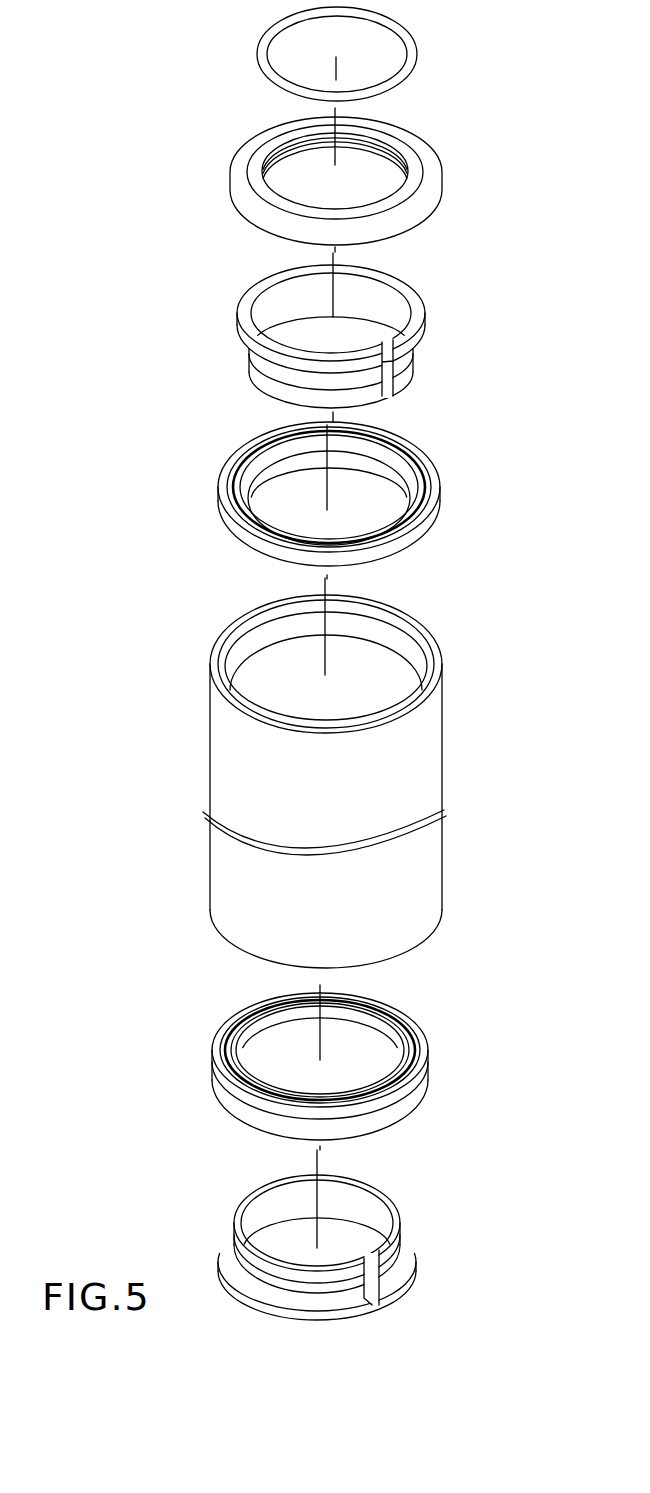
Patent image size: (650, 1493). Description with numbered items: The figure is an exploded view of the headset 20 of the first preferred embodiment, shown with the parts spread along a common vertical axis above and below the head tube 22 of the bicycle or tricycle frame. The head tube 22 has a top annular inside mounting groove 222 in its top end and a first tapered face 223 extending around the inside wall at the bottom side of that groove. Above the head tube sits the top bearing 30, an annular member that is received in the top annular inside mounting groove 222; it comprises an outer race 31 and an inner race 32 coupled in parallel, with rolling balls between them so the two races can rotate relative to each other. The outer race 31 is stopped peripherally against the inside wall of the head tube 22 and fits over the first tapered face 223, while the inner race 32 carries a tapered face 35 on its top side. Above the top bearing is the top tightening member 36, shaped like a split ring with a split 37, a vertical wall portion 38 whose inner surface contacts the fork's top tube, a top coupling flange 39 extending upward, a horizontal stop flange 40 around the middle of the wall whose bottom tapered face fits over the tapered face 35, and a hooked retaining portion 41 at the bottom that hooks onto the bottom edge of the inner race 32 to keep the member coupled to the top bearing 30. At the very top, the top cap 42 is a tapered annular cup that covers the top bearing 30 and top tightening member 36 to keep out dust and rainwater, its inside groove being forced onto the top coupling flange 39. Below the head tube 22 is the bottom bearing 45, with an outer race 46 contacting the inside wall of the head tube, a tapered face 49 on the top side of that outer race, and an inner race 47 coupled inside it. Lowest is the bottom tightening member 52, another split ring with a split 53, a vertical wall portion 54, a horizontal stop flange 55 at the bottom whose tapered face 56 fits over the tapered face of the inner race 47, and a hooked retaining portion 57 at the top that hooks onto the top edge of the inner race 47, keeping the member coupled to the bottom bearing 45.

The headset 20 is at (178, 316).
The head tube 22 is at (423, 752).
The top annular inside mounting groove 222 is at (410, 637).
The first tapered face 223 is at (383, 638).
The top bearing 30 is at (218, 517).
The outer race 31 is at (420, 528).
The inner race 32 is at (385, 472).
The tapered face 35 is at (412, 488).
The top tightening member 36 is at (247, 292).
The split 37 is at (390, 393).
The vertical wall portion 38 is at (373, 297).
The top coupling flange 39 is at (407, 305).
The horizontal stop flange 40 is at (413, 330).
The hooked retaining portion 41 is at (410, 373).
The top cap 42 is at (427, 173).
The bottom bearing 45 is at (428, 1078).
The outer race 46 is at (402, 1108).
The inner race 47 is at (367, 1017).
The tapered face 49 is at (420, 1047).
The bottom tightening member 52 is at (232, 1253).
The split 53 is at (390, 1307).
The vertical wall portion 54 is at (372, 1210).
The horizontal stop flange 55 is at (413, 1267).
The tapered face 56 is at (398, 1250).
The hooked retaining portion 57 is at (268, 1265).